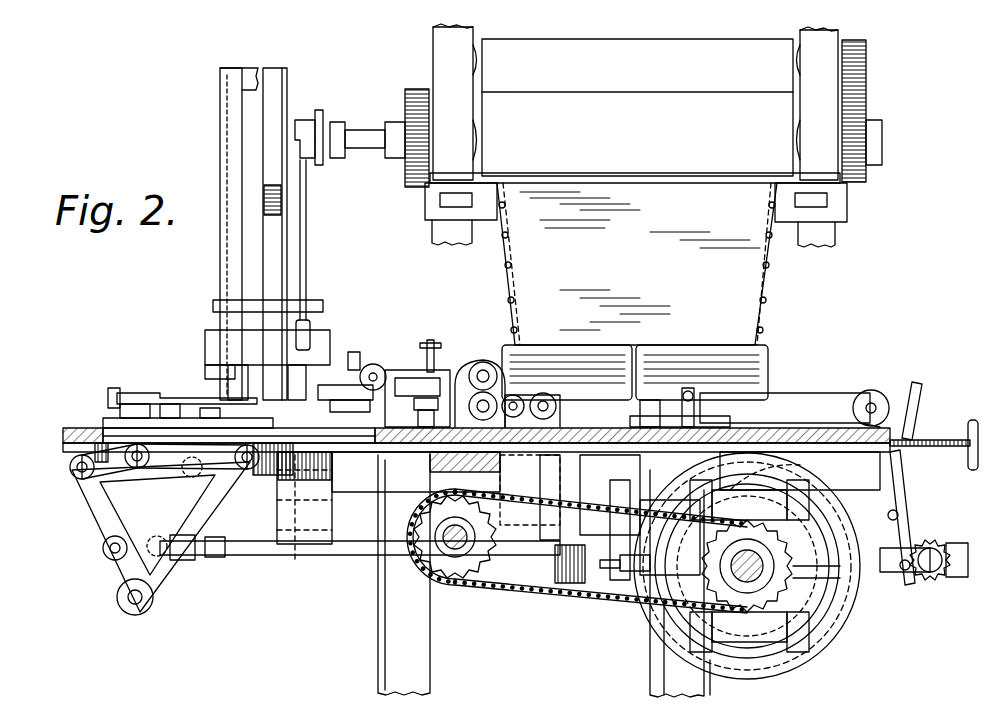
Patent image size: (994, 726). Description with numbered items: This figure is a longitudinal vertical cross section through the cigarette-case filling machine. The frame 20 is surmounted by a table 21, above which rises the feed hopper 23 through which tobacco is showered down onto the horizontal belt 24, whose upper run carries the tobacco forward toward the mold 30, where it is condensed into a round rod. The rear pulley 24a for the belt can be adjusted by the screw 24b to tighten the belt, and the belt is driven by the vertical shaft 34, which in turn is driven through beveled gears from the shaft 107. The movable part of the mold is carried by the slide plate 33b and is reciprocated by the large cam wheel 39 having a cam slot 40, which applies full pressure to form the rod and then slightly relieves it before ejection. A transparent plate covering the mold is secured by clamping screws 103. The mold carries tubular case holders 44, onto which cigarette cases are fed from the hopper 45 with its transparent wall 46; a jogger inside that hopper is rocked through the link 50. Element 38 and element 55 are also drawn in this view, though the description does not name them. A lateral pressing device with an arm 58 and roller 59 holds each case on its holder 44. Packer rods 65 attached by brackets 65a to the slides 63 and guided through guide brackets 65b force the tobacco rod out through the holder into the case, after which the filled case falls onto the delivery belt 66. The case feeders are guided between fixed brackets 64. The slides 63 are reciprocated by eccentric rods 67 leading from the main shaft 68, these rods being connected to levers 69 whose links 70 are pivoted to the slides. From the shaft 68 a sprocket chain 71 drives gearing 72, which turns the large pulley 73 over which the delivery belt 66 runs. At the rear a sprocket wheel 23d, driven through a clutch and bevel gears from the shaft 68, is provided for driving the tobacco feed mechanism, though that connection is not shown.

The frame 20 is at (385, 603).
The table 21 is at (800, 470).
The feed hopper 23 is at (637, 264).
The sprocket wheel 23d is at (930, 585).
The horizontal belt 24 is at (797, 395).
The rear pulley 24a is at (871, 398).
The screw 24b is at (927, 452).
The mold 30 is at (440, 351).
The slide plate 33b is at (420, 396).
The vertical shaft 34 is at (538, 510).
The feed roller housing 38 is at (481, 362).
The cam wheel 39 is at (840, 640).
The cam slot 40 is at (842, 608).
The case holder 44 is at (420, 398).
The hopper 45 is at (265, 234).
The transparent wall 46 is at (230, 256).
The link 50 is at (307, 280).
The lever 55 is at (215, 395).
The arm 58 is at (345, 398).
The roller 59 is at (370, 363).
The slide 63 is at (700, 423).
The fixed bracket 64 is at (112, 392).
The packer rod 65 is at (640, 400).
The bracket 65a is at (600, 400).
The guide bracket 65b is at (700, 408).
The delivery belt 66 is at (333, 380).
The eccentric rod 67 is at (258, 560).
The shaft 68 is at (665, 614).
The lever 69 is at (100, 532).
The link 70 is at (85, 504).
The sprocket chain 71 is at (528, 592).
The gearing 72 is at (472, 498).
The large pulley 73 is at (295, 521).
The clamping screw 103 is at (432, 365).
The shaft 107 is at (620, 580).